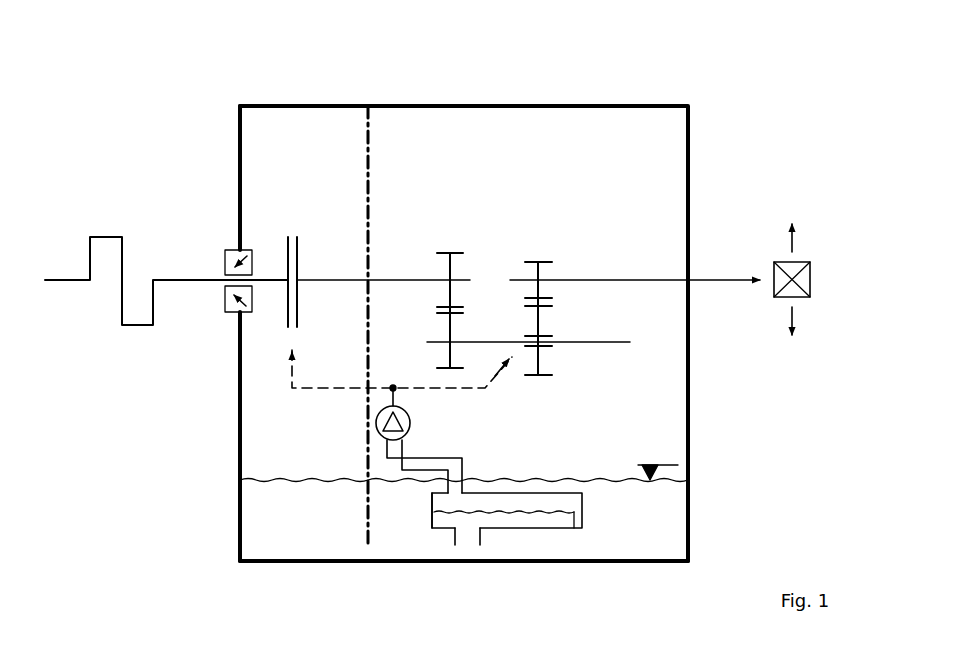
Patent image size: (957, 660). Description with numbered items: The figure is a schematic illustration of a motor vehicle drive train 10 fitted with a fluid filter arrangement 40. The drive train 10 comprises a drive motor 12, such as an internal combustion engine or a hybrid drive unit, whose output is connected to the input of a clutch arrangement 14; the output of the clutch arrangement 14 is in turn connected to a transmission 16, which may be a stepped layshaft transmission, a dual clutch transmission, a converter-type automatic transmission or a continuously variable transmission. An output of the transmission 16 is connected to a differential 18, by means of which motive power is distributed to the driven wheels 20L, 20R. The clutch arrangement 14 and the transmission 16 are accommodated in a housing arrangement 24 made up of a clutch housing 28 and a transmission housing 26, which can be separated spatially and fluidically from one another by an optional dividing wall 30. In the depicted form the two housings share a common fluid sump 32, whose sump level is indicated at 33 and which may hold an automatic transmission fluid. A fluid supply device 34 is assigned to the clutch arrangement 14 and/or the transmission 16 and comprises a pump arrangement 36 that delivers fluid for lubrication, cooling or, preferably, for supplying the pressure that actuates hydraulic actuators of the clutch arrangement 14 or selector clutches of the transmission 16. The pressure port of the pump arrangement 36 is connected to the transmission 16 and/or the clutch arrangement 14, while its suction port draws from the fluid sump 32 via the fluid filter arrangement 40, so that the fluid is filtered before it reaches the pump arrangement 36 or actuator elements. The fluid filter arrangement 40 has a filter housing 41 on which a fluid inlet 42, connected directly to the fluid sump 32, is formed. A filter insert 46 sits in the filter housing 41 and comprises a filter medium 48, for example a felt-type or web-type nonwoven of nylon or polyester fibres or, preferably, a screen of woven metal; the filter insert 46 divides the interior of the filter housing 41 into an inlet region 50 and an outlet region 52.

The drive train 10 is at (752, 104).
The drive motor 12 is at (103, 237).
The clutch arrangement 14 is at (286, 224).
The transmission 16 is at (546, 132).
The differential 18 is at (812, 279).
The driven wheel 20R is at (795, 240).
The driven wheel 20L is at (795, 317).
The housing arrangement 24 is at (625, 97).
The transmission housing 26 is at (487, 105).
The clutch housing 28 is at (303, 105).
The dividing wall 30 is at (368, 165).
The fluid sump 32 is at (690, 528).
The sump level 33 is at (678, 465).
The fluid supply device 34 is at (652, 414).
The pump arrangement 36 is at (412, 423).
The fluid filter arrangement 40 is at (547, 522).
The filter housing 41 is at (421, 526).
The fluid inlet 42 is at (462, 462).
The filter insert 46 is at (496, 522).
The filter medium 48 is at (574, 512).
The inlet region 50 is at (517, 522).
The outlet region 52 is at (565, 500).